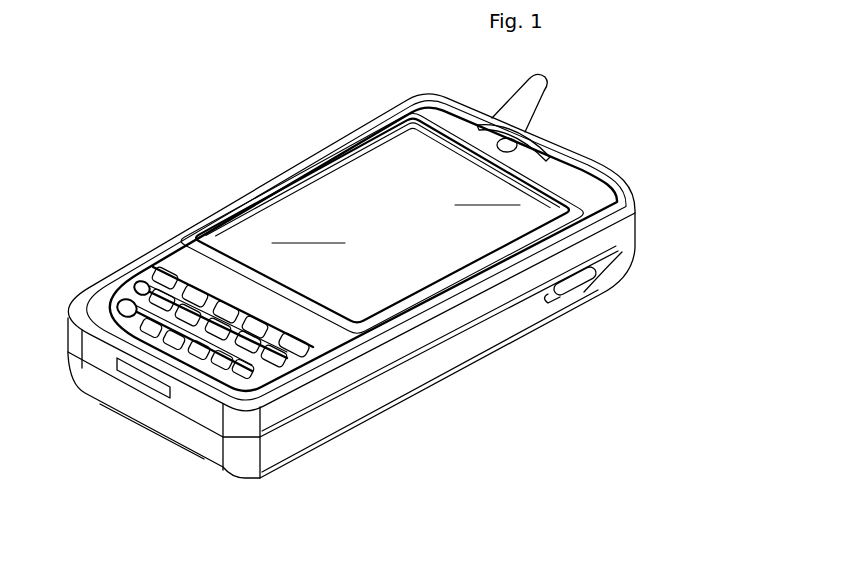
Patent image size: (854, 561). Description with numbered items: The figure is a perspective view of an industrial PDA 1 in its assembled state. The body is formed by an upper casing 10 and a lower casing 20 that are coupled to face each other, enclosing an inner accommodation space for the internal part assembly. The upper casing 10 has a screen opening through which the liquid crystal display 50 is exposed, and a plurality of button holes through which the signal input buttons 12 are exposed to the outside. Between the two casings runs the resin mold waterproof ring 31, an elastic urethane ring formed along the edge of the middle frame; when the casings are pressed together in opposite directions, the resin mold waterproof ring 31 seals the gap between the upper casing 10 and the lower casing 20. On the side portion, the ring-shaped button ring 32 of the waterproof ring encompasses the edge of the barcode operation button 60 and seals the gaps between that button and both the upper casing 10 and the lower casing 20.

The industrial PDA 1 is at (139, 160).
The upper casing 10 is at (630, 230).
The signal input buttons 12 is at (157, 266).
The lower casing 20 is at (360, 410).
The resin mold waterproof ring 31 is at (624, 251).
The button ring 32 is at (585, 294).
The liquid crystal display 50 is at (385, 163).
The barcode operation button 60 is at (596, 283).